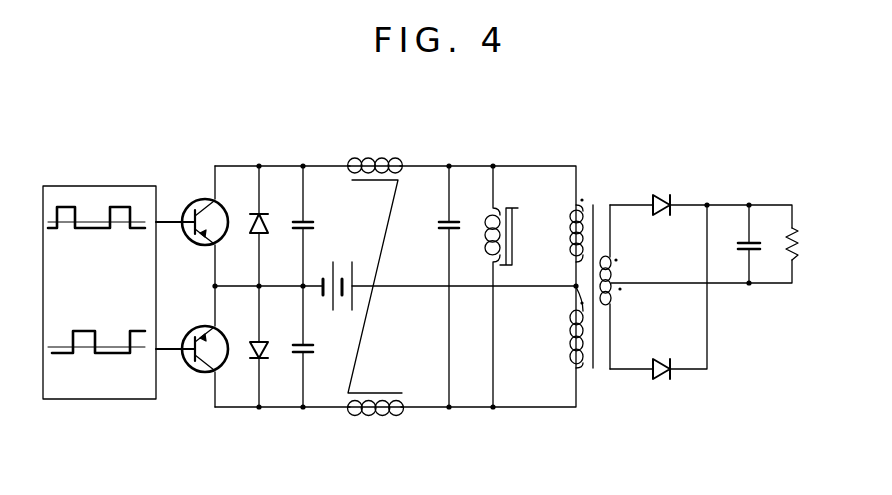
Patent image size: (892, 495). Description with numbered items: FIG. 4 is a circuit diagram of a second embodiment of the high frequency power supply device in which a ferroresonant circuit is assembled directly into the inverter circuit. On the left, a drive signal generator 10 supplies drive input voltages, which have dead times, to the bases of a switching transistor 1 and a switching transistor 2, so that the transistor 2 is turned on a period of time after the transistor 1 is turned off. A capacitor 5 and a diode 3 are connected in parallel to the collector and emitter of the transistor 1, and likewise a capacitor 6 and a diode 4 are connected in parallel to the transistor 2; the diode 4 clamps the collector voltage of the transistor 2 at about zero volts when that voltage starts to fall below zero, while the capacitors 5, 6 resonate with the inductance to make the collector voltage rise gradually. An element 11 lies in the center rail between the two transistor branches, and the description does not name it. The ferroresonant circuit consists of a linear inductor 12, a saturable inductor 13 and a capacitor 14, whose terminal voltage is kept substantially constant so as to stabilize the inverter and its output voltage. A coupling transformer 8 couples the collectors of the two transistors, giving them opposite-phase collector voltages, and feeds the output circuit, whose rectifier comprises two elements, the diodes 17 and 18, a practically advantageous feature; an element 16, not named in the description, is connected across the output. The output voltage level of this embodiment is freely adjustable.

The switching transistor 1 is at (197, 200).
The switching transistor 2 is at (193, 372).
The diode 3 is at (262, 205).
The diode 4 is at (268, 372).
The capacitor 5 is at (314, 210).
The capacitor 6 is at (312, 349).
The coupling transformer 8 is at (596, 375).
The drive signal generator 10 is at (86, 401).
The DC power source 11 is at (343, 262).
The linear inductor 12 is at (395, 160).
The saturable inductor 13 is at (500, 207).
The capacitor 14 is at (455, 210).
The smoothing capacitor 16 is at (758, 238).
The diode 17 is at (665, 192).
The diode 18 is at (663, 380).